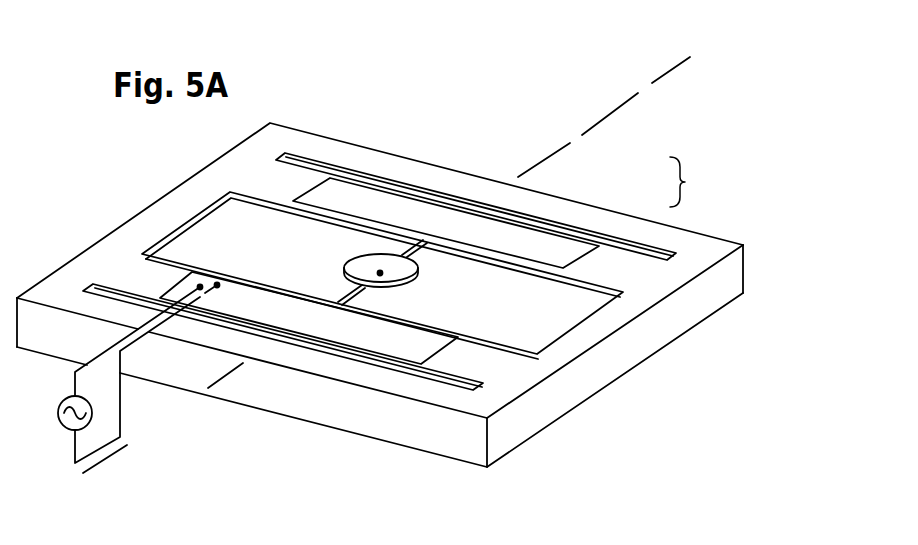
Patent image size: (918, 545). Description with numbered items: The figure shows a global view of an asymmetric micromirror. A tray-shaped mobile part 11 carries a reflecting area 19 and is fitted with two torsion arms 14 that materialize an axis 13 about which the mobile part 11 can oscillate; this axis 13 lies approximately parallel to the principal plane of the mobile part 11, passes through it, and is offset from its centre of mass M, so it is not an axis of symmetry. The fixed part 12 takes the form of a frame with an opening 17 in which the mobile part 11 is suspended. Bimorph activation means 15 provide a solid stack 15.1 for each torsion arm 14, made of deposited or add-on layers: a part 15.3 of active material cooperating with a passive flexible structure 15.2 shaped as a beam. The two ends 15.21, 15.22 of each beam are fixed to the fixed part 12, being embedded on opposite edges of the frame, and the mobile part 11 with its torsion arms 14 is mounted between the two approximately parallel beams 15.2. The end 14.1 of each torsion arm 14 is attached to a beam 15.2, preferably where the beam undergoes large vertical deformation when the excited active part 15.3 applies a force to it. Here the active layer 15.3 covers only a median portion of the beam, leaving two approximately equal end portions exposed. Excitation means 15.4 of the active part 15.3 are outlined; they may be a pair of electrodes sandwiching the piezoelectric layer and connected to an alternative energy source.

The mobile part 11 is at (416, 268).
The centre of mass M is at (382, 274).
The fixed part 12 is at (588, 358).
The axis 13 is at (675, 68).
The torsion arm 14 is at (353, 287).
The end of torsion arm 14.1 is at (339, 302).
The bimorph activation means 15 is at (721, 155).
The solid stack 15.1 is at (699, 182).
The passive flexible structure 15.2 is at (610, 266).
The part made of an active material 15.3 is at (525, 243).
The end of beam 15.21 is at (488, 363).
The end of beam 15.22 is at (115, 273).
The excitation means 15.4 is at (122, 410).
The opening in frame 17 is at (226, 264).
The reflecting area 19 is at (360, 263).